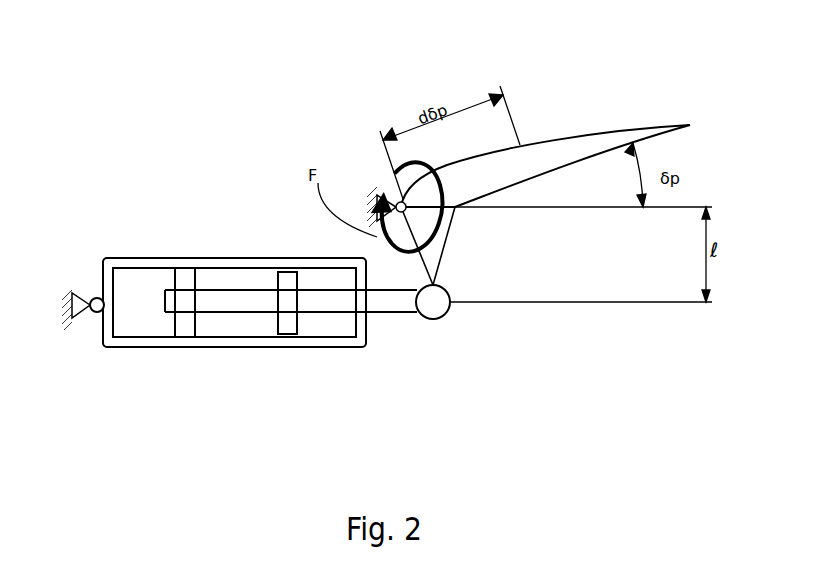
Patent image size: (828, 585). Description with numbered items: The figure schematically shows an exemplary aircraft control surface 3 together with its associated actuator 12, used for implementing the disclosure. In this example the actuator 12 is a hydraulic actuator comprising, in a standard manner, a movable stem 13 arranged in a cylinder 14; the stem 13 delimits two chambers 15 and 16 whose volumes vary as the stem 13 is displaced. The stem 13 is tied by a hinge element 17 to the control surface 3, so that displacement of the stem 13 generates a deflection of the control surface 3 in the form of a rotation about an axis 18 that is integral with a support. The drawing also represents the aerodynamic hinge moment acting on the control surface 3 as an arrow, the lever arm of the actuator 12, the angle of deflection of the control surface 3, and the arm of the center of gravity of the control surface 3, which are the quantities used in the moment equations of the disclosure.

The control surface 3 is at (548, 137).
The actuator 12 is at (239, 288).
The movable stem 13 is at (393, 314).
The cylinder 14 is at (133, 349).
The chamber 15 is at (207, 321).
The chamber 16 is at (309, 282).
The hinge element 17 is at (436, 320).
The axis 18 is at (394, 200).